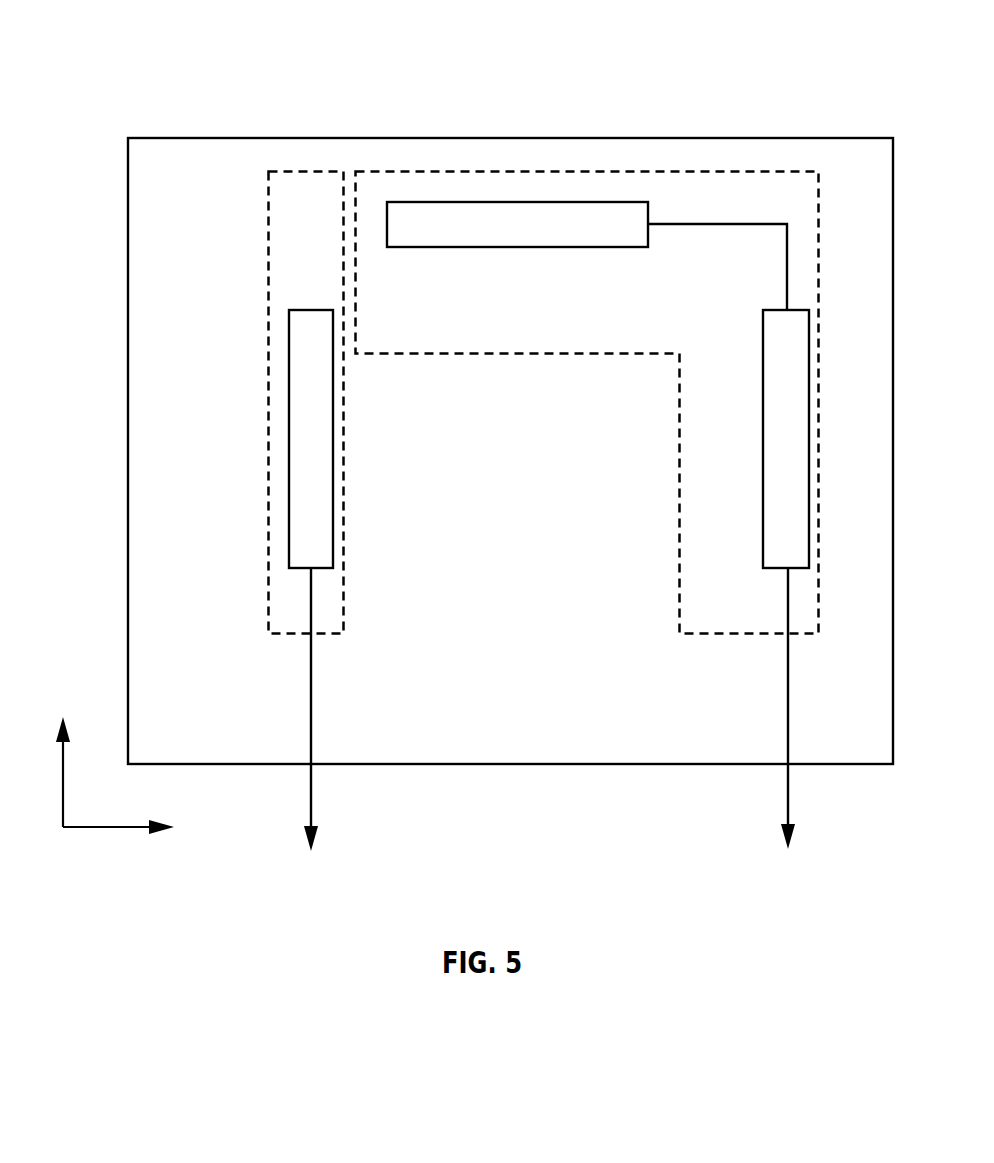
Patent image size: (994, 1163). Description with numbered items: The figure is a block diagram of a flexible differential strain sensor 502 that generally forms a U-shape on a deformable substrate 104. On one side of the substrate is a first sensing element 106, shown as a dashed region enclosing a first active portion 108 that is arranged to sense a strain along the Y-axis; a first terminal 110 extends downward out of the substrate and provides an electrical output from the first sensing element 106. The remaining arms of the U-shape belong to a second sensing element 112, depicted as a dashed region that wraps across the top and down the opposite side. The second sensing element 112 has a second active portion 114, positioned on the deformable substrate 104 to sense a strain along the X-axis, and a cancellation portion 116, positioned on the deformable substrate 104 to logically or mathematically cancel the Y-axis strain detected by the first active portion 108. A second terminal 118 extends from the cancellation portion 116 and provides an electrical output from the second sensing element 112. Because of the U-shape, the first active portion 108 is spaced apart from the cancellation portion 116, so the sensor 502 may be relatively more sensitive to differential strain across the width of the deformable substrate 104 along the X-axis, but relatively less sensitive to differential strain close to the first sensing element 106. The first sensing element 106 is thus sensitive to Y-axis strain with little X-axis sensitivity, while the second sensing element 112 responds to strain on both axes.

The flexible differential strain sensor 502 is at (148, 76).
The deformable substrate 104 is at (513, 730).
The first sensing element 106 is at (268, 484).
The first active portion 108 is at (313, 418).
The first terminal 110 is at (311, 797).
The second sensing element 112 is at (678, 514).
The second active portion 114 is at (552, 227).
The cancellation portion 116 is at (783, 330).
The second terminal 118 is at (788, 802).